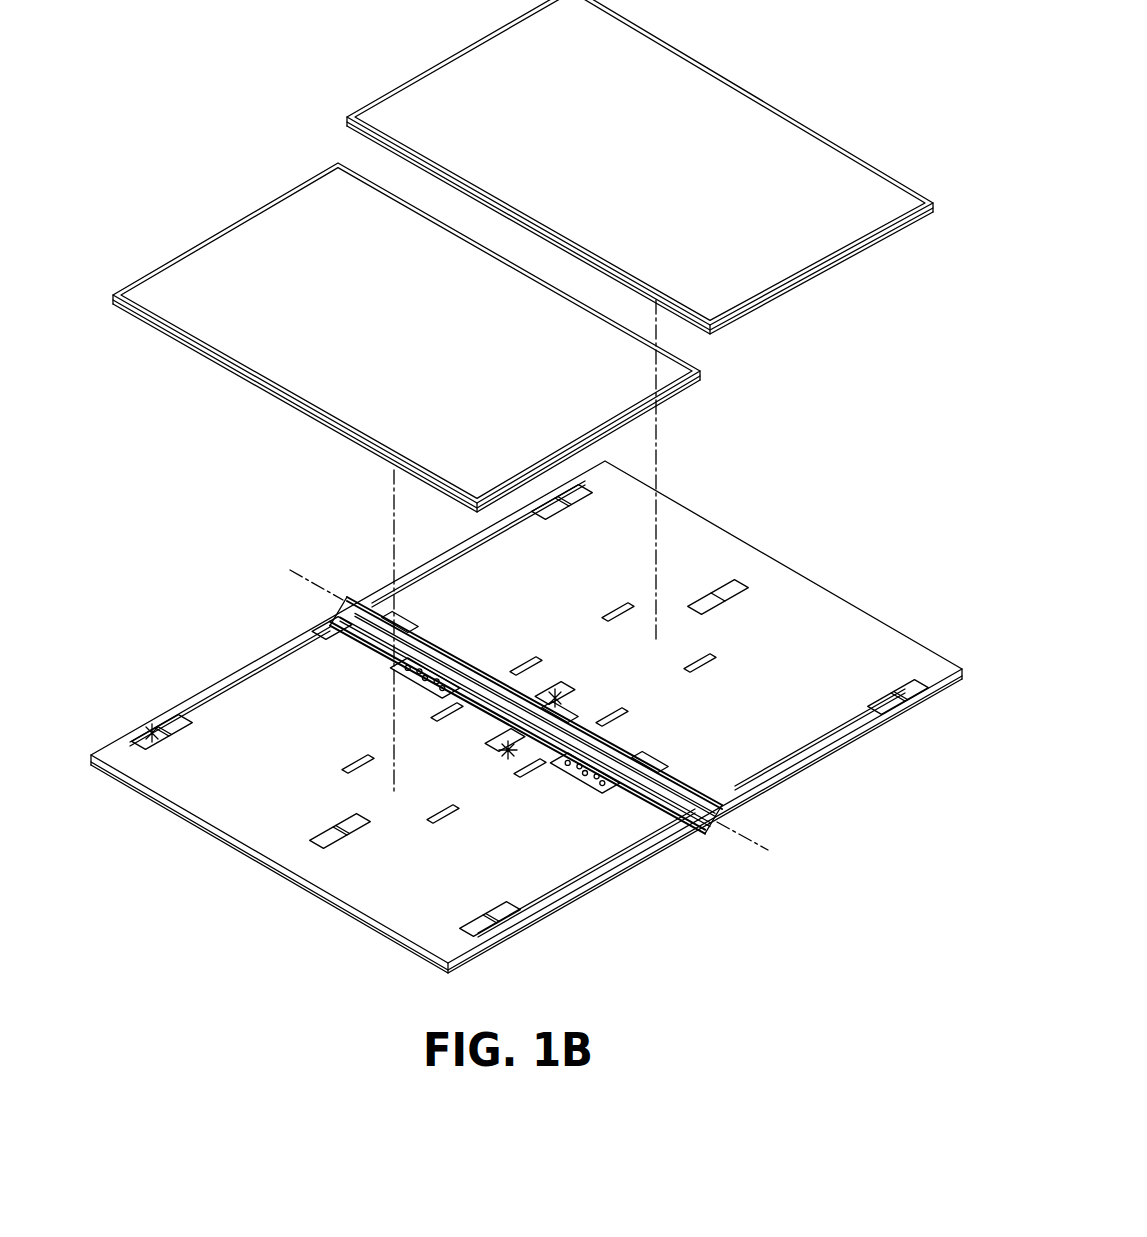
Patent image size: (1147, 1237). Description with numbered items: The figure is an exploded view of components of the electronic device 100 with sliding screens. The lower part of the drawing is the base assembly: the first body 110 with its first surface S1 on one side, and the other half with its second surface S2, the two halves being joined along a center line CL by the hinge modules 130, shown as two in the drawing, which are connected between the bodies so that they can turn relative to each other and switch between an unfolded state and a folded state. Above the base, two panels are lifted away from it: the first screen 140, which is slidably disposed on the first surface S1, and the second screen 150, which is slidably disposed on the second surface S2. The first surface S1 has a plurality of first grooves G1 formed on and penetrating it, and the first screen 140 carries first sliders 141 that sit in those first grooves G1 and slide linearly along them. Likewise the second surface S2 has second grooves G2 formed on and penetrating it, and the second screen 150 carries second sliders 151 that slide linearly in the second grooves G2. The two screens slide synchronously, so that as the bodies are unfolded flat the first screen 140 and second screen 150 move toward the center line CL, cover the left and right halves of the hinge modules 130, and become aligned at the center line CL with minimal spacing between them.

The electronic device with sliding screens 100 is at (521, 486).
The first body 110 is at (572, 863).
The hinge modules 130 is at (443, 655).
The first screen 140 is at (263, 228).
The first sliders 141 is at (483, 722).
The second screen 150 is at (487, 66).
The second sliders 151 is at (713, 790).
The first grooves G1 is at (150, 730).
The second grooves G2 is at (556, 692).
The first surface S1 is at (345, 885).
The second surface S2 is at (788, 592).
The center line CL is at (548, 584).